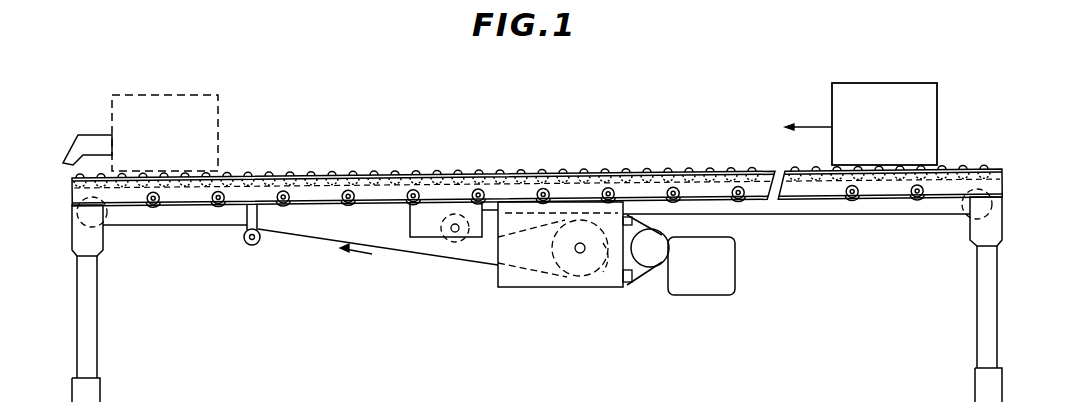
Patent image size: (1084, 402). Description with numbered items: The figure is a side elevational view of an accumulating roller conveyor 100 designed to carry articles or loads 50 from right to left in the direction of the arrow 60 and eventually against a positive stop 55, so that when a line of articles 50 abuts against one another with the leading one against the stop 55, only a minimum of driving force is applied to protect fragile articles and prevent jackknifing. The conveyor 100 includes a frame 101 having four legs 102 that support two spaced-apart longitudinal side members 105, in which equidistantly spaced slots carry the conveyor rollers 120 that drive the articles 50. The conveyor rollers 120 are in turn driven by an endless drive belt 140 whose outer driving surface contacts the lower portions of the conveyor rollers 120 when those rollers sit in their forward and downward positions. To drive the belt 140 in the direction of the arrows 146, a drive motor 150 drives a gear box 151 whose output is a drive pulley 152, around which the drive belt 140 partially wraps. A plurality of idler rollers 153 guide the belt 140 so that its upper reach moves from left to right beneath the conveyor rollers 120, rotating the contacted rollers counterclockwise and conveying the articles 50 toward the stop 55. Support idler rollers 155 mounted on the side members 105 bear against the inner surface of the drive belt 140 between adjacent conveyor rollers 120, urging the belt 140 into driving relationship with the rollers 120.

The accumulating roller conveyor 100 is at (198, 48).
The article 50 is at (176, 95).
The positive stop 55 is at (92, 134).
The arrow 60 is at (808, 126).
The frame 101 is at (108, 243).
The leg 102 is at (97, 322).
The longitudinal side member 105 is at (308, 204).
The conveyor roller 120 is at (378, 173).
The drive belt 140 is at (250, 177).
The arrow 146 is at (364, 255).
The drive motor 150 is at (716, 296).
The gear box 151 is at (656, 260).
The drive pulley 152 is at (599, 288).
The idler roller 153 is at (108, 220).
The support idler roller 155 is at (913, 205).